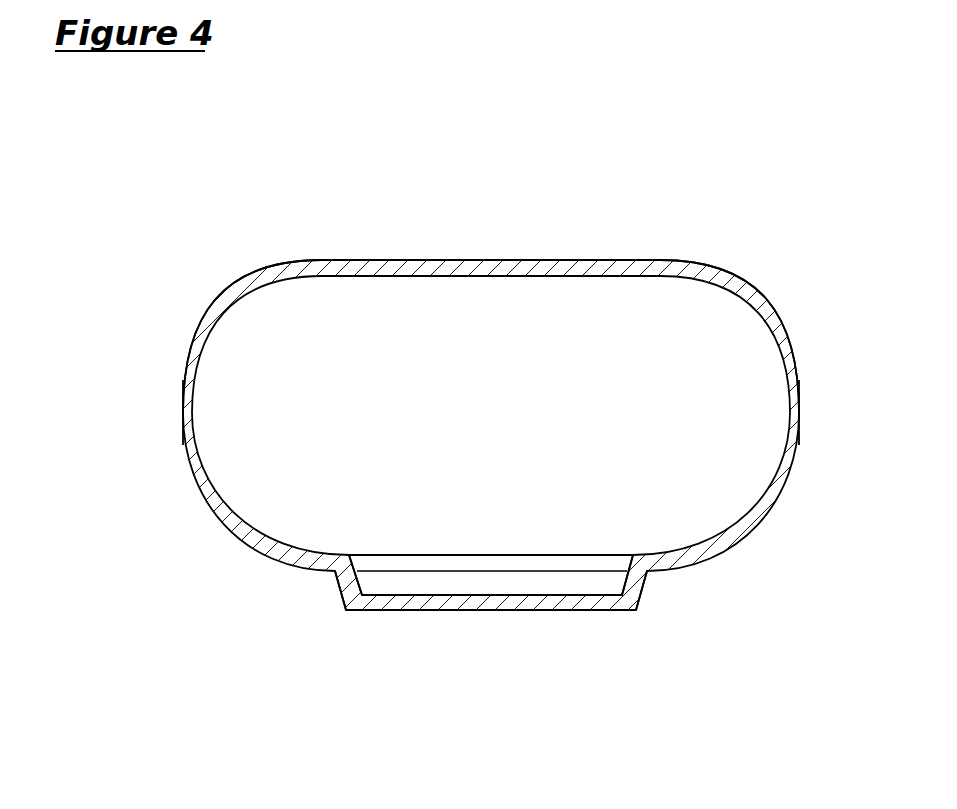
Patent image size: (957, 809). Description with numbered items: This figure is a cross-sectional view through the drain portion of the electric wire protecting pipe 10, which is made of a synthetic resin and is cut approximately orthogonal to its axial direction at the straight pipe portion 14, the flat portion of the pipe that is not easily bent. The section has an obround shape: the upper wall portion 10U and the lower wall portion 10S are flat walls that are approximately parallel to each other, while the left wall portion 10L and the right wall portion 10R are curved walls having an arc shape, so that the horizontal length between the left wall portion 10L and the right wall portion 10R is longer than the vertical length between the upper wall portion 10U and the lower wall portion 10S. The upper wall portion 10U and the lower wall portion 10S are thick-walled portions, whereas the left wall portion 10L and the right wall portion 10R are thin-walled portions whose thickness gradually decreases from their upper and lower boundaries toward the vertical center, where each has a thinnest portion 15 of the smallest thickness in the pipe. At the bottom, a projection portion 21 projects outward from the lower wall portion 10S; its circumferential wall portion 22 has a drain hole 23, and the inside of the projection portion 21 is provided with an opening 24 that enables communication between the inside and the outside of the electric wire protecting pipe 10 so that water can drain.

The electric wire protecting pipe 10 is at (478, 411).
The upper wall portion 10U is at (520, 268).
The left wall portion 10L is at (776, 325).
The right wall portion 10R is at (200, 338).
The lower wall portion 10S is at (523, 563).
The straight pipe portion 14 is at (630, 265).
The thinnest portion 15 is at (182, 424).
The projection portion 21 is at (415, 606).
The circumferential wall portion 22 is at (637, 583).
The drain hole 23 is at (585, 580).
The opening 24 is at (467, 563).